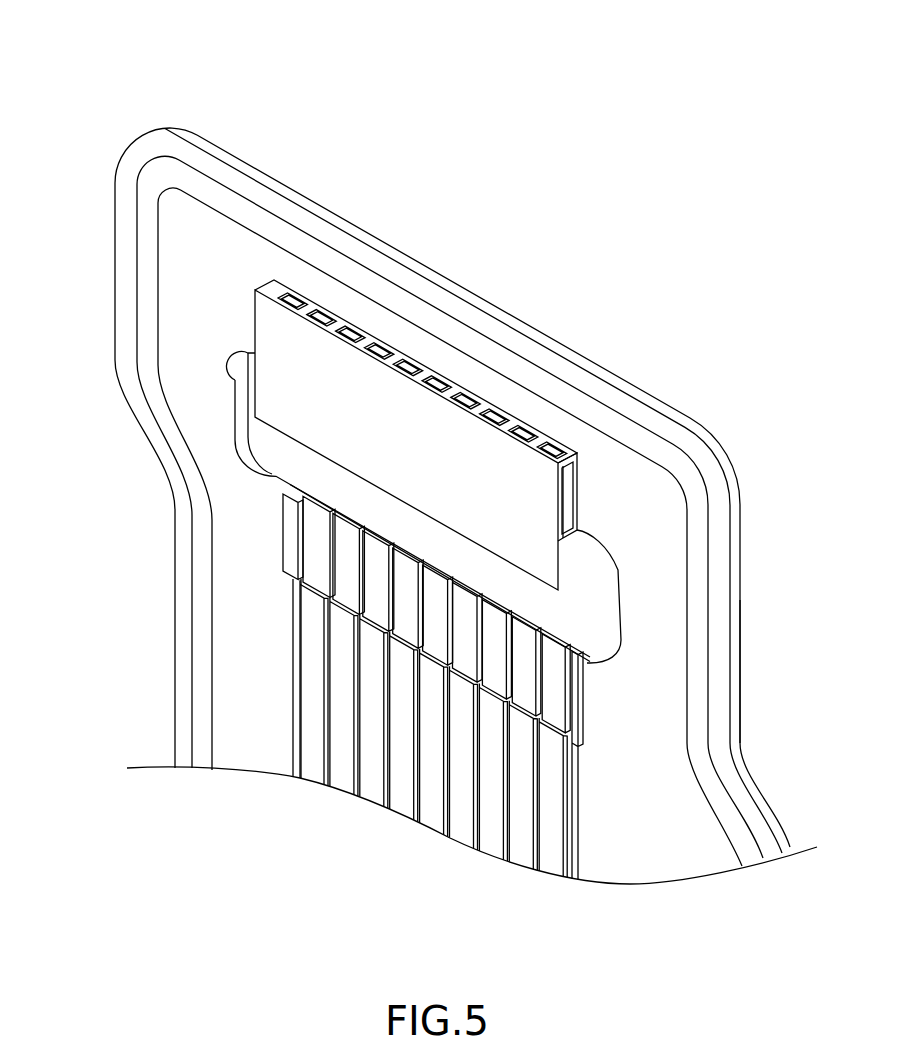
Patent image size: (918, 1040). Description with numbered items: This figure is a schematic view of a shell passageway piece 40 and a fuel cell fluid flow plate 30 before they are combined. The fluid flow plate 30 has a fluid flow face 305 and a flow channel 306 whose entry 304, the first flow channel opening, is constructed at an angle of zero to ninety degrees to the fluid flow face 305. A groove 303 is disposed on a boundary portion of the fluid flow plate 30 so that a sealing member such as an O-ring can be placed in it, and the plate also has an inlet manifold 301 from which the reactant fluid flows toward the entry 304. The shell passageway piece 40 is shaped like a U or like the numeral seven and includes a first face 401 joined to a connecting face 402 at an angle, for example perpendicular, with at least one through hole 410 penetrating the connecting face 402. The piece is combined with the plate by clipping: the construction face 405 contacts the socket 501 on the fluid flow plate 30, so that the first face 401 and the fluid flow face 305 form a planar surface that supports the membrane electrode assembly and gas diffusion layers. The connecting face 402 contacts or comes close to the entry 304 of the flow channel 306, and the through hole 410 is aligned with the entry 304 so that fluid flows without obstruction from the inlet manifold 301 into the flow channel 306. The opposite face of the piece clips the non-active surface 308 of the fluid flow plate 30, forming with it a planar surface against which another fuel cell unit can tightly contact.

The fuel cell fluid flow plate 30 is at (140, 76).
The inlet manifold 301 is at (273, 440).
The groove 303 is at (147, 262).
The entry 304 is at (300, 550).
The fluid flow face 305 is at (235, 618).
The flow channel 306 is at (313, 718).
The non-active surface 308 is at (675, 603).
The shell passageway piece 40 is at (238, 285).
The first face 401 is at (270, 332).
The connecting face 402 is at (567, 447).
The construction face 405 is at (578, 489).
The through hole 410 is at (273, 280).
The socket 501 is at (584, 700).